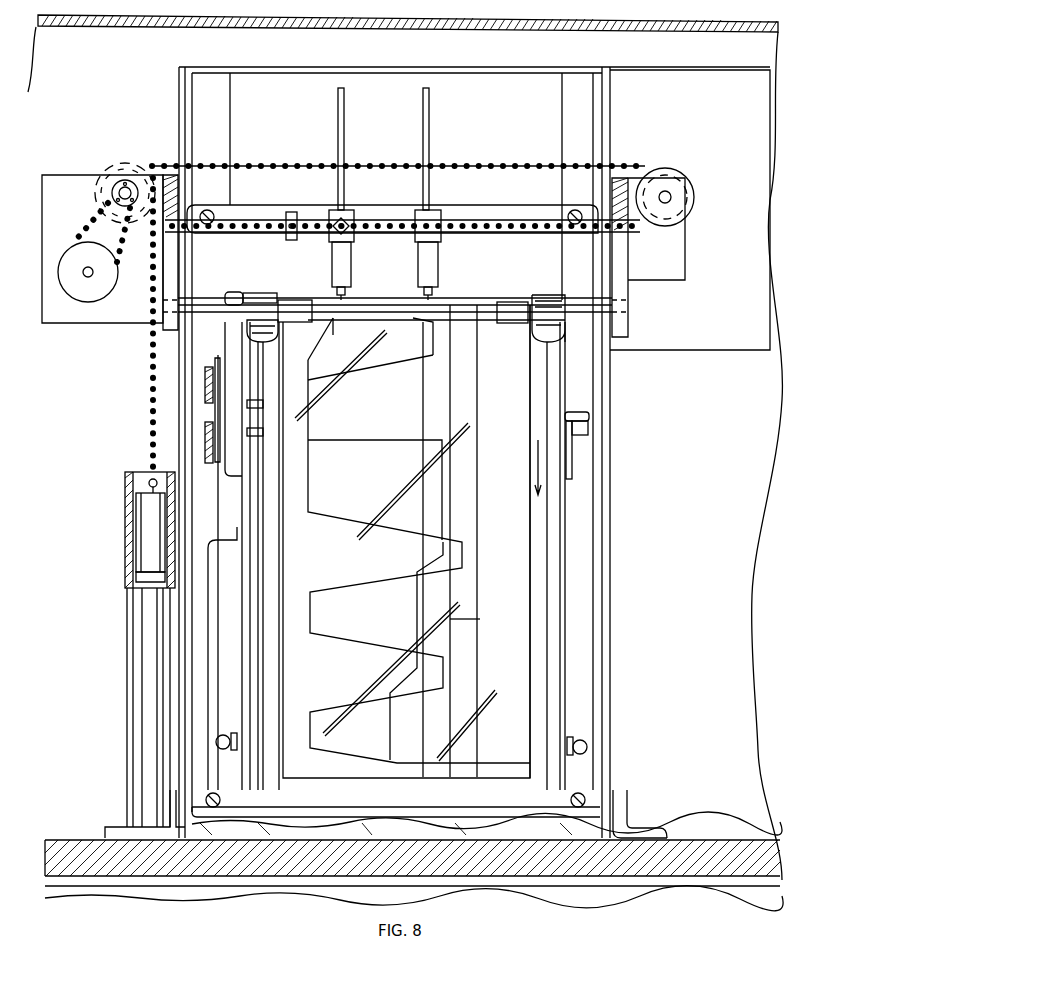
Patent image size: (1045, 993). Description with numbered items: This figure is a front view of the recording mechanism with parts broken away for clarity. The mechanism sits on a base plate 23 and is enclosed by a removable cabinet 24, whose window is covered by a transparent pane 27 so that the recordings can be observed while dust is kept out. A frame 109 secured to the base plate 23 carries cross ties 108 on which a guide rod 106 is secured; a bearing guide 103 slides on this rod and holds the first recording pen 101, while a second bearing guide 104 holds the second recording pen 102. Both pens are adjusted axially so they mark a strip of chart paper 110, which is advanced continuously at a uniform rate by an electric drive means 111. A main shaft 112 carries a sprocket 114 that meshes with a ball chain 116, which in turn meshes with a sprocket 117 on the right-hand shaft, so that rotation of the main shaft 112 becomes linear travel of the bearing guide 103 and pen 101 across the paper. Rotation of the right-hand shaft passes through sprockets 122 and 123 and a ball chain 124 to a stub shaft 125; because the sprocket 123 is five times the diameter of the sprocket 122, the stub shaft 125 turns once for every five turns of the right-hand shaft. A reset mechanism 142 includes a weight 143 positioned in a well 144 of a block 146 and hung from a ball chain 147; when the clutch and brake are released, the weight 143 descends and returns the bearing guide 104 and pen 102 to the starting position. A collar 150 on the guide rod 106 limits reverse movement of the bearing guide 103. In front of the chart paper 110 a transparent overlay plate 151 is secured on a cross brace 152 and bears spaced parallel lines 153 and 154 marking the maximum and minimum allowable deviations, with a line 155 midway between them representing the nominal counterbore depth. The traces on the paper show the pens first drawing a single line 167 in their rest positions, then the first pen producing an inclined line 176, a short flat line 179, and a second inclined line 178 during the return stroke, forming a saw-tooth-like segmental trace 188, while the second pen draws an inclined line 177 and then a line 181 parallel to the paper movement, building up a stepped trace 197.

The base plate 23 is at (703, 846).
The removable cabinet 24 is at (752, 590).
The transparent pane 27 is at (322, 832).
The first recording pen 101 is at (429, 128).
The second recording pen 102 is at (345, 128).
The bearing guide 103 is at (438, 262).
The bearing guide 104 is at (345, 262).
The guide rod 106 is at (516, 232).
The cross ties 108 is at (625, 262).
The frame 109 is at (613, 388).
The chart paper 110 is at (540, 577).
The electric drive means 111 is at (562, 640).
The main shaft 112 is at (671, 198).
The sprocket 114 is at (688, 157).
The ball chain 116 is at (505, 166).
The sprocket 117 is at (150, 145).
The sprocket 122 is at (124, 190).
The sprocket 123 is at (88, 298).
The ball chain 124 is at (60, 230).
The stub shaft 125 is at (94, 272).
The reset mechanism 142 is at (124, 479).
The weight 143 is at (136, 525).
The well 144 is at (140, 582).
The block 146 is at (130, 640).
The ball chain 147 is at (150, 380).
The collar 150 is at (290, 240).
The transparent overlay plate 151 is at (535, 610).
The cross brace 152 is at (581, 302).
The line 153 is at (420, 557).
The line 154 is at (449, 583).
The line 155 is at (481, 619).
The single line 167 is at (312, 418).
The inclined line 176 is at (373, 370).
The inclined line 177 is at (310, 352).
The second inclined line 178 is at (413, 322).
The short flat line 179 is at (438, 357).
The line 181 is at (334, 320).
The saw-tooth-like segmental trace 188 is at (406, 363).
The stepped trace 197 is at (338, 333).